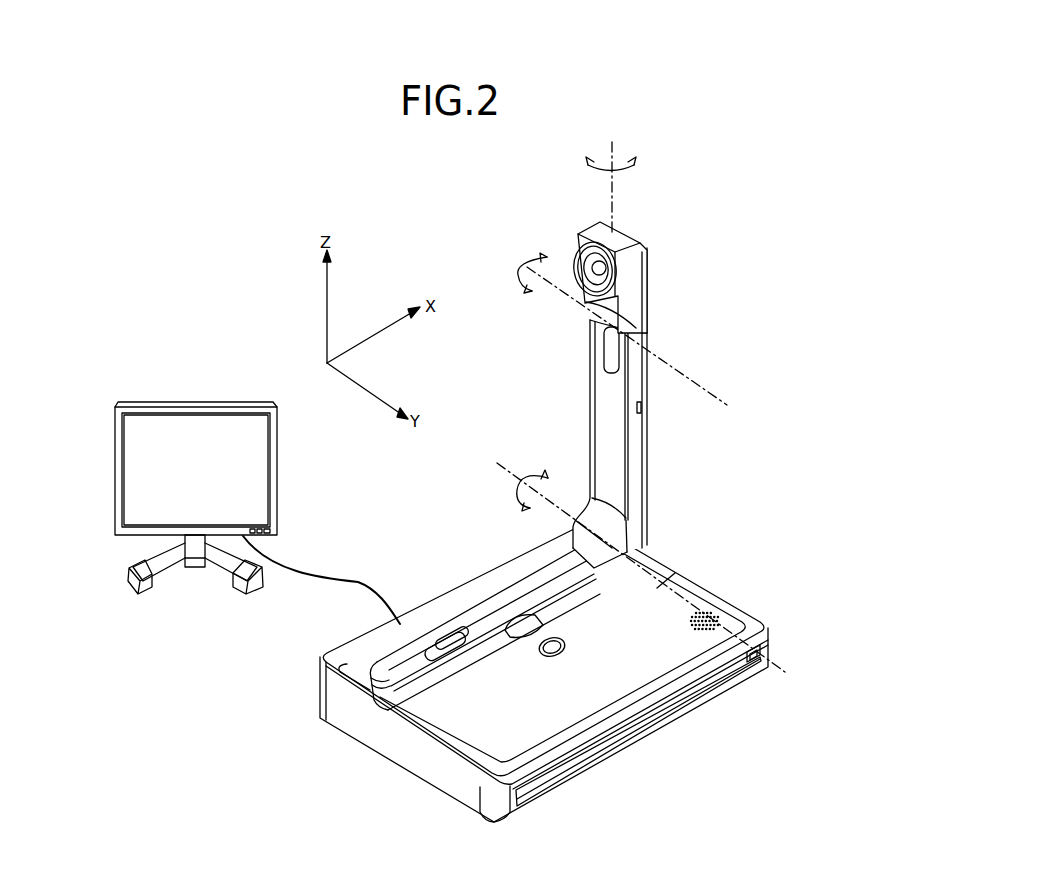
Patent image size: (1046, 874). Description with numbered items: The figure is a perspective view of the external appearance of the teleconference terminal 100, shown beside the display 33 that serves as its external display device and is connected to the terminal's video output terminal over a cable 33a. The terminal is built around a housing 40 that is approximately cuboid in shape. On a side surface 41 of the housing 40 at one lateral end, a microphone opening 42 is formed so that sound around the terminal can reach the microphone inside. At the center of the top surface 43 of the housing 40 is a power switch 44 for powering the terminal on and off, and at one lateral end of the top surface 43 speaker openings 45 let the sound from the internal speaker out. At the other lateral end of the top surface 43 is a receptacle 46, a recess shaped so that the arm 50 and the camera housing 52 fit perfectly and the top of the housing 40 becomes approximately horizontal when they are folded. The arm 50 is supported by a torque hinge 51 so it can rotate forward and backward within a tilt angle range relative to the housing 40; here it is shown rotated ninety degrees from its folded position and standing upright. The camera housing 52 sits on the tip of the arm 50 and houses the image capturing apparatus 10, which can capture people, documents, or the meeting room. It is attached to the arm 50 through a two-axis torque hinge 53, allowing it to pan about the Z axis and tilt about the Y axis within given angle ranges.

The teleconference terminal 100 is at (526, 482).
The image capturing apparatus 10 is at (575, 252).
The display 33 is at (277, 440).
The cable 33a is at (318, 571).
The housing 40 is at (526, 676).
The side surface 41 is at (530, 790).
The microphone opening 42 is at (762, 658).
The top surface 43 is at (677, 572).
The power switch 44 is at (540, 648).
The speaker openings 45 is at (735, 605).
The receptacle 46 is at (470, 598).
The arm 50 is at (622, 408).
The torque hinge 51 is at (635, 535).
The camera housing 52 is at (616, 276).
The two-axis torque hinge 53 is at (607, 350).